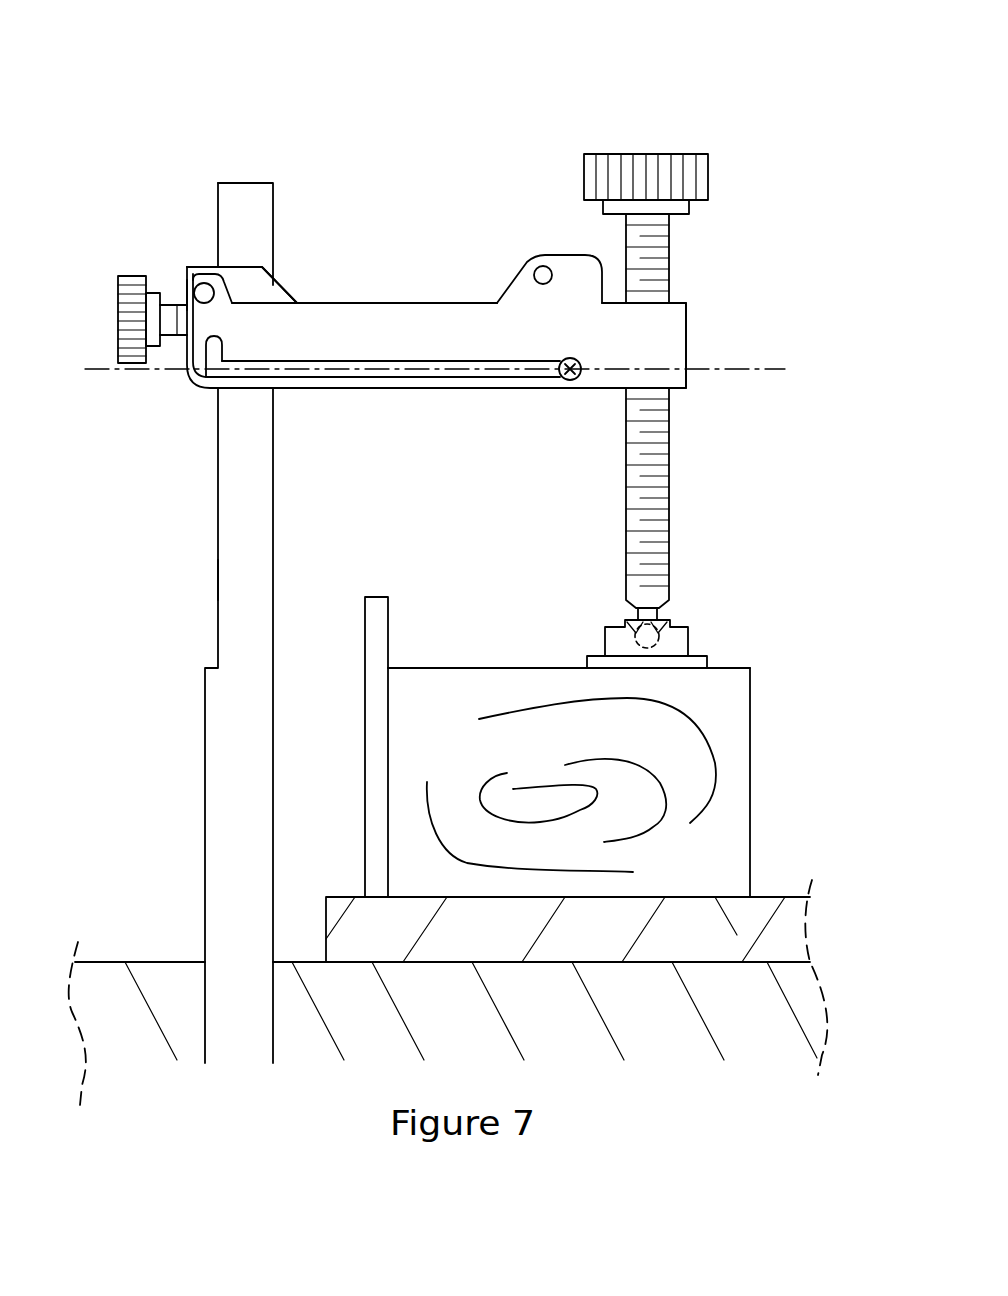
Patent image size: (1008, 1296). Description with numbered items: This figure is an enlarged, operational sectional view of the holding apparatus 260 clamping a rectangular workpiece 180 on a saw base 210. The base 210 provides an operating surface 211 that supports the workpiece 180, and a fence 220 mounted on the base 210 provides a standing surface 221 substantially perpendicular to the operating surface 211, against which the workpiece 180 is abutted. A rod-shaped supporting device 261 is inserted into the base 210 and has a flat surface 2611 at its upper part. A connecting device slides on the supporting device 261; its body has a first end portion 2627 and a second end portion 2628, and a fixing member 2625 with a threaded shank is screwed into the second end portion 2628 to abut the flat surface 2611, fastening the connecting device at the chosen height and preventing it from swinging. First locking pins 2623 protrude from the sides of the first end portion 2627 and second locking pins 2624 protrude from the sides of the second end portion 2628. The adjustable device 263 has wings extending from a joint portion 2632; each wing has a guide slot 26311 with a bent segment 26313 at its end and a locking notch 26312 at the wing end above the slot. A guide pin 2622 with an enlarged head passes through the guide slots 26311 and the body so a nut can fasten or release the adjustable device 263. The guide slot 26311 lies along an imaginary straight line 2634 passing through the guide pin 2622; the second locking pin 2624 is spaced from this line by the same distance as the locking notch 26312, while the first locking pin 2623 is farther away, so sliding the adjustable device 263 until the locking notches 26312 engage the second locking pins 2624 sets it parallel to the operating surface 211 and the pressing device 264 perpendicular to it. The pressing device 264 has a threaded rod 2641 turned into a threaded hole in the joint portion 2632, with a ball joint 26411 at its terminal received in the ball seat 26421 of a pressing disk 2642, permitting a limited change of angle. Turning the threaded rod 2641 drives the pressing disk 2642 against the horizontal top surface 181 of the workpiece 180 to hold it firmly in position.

The holding apparatus 260 is at (431, 100).
The supporting device 261 is at (213, 690).
The flat surface 2611 is at (218, 580).
The adjustable device 263 is at (700, 348).
The joint portion 2632 is at (676, 312).
The guide slot 26311 is at (372, 378).
The locking notch 26312 is at (184, 289).
The bent segment 26313 is at (200, 375).
The imaginary straight line 2634 is at (100, 372).
The guide pin 2622 is at (570, 383).
The first locking pin 2623 is at (533, 275).
The second locking pin 2624 is at (204, 283).
The fixing member 2625 is at (122, 295).
The first end portion 2627 is at (558, 262).
The second end portion 2628 is at (262, 286).
The pressing device 264 is at (650, 147).
The threaded rod 2641 is at (665, 480).
The pressing disk 2642 is at (587, 662).
The ball joint 26411 is at (605, 638).
The ball seat 26421 is at (682, 645).
The workpiece 180 is at (750, 851).
The horizontal top surface 181 is at (718, 680).
The base 210 is at (860, 948).
The operating surface 211 is at (737, 935).
The fence 220 is at (372, 672).
The standing surface 221 is at (386, 620).